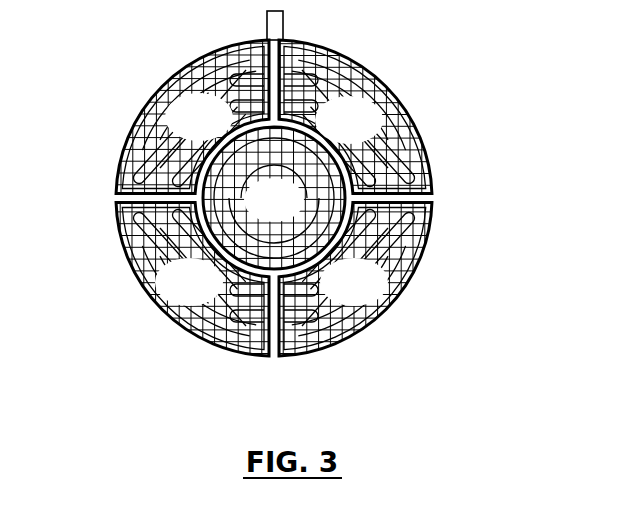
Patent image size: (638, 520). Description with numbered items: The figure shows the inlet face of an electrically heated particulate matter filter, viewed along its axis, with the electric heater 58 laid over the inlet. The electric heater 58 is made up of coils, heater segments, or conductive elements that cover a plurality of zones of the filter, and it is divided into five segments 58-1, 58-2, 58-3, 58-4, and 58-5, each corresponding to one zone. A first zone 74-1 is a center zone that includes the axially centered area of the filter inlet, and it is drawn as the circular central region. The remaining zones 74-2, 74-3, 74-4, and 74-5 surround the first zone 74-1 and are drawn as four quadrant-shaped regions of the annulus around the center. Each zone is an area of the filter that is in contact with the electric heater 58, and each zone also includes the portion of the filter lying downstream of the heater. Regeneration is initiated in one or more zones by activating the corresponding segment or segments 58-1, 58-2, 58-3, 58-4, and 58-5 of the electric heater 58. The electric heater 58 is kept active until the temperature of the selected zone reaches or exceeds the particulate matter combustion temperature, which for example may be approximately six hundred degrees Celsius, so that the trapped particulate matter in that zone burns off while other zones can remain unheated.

The electric heater 58 is at (343, 56).
The first heater segment 58-1 is at (330, 232).
The second heater segment 58-2 is at (372, 166).
The third heater segment 58-3 is at (362, 334).
The fourth heater segment 58-4 is at (135, 258).
The fifth heater segment 58-5 is at (140, 157).
The first zone 74-1 is at (274, 204).
The second zone 74-2 is at (355, 117).
The third zone 74-3 is at (355, 279).
The fourth zone 74-4 is at (193, 279).
The fifth zone 74-5 is at (193, 117).